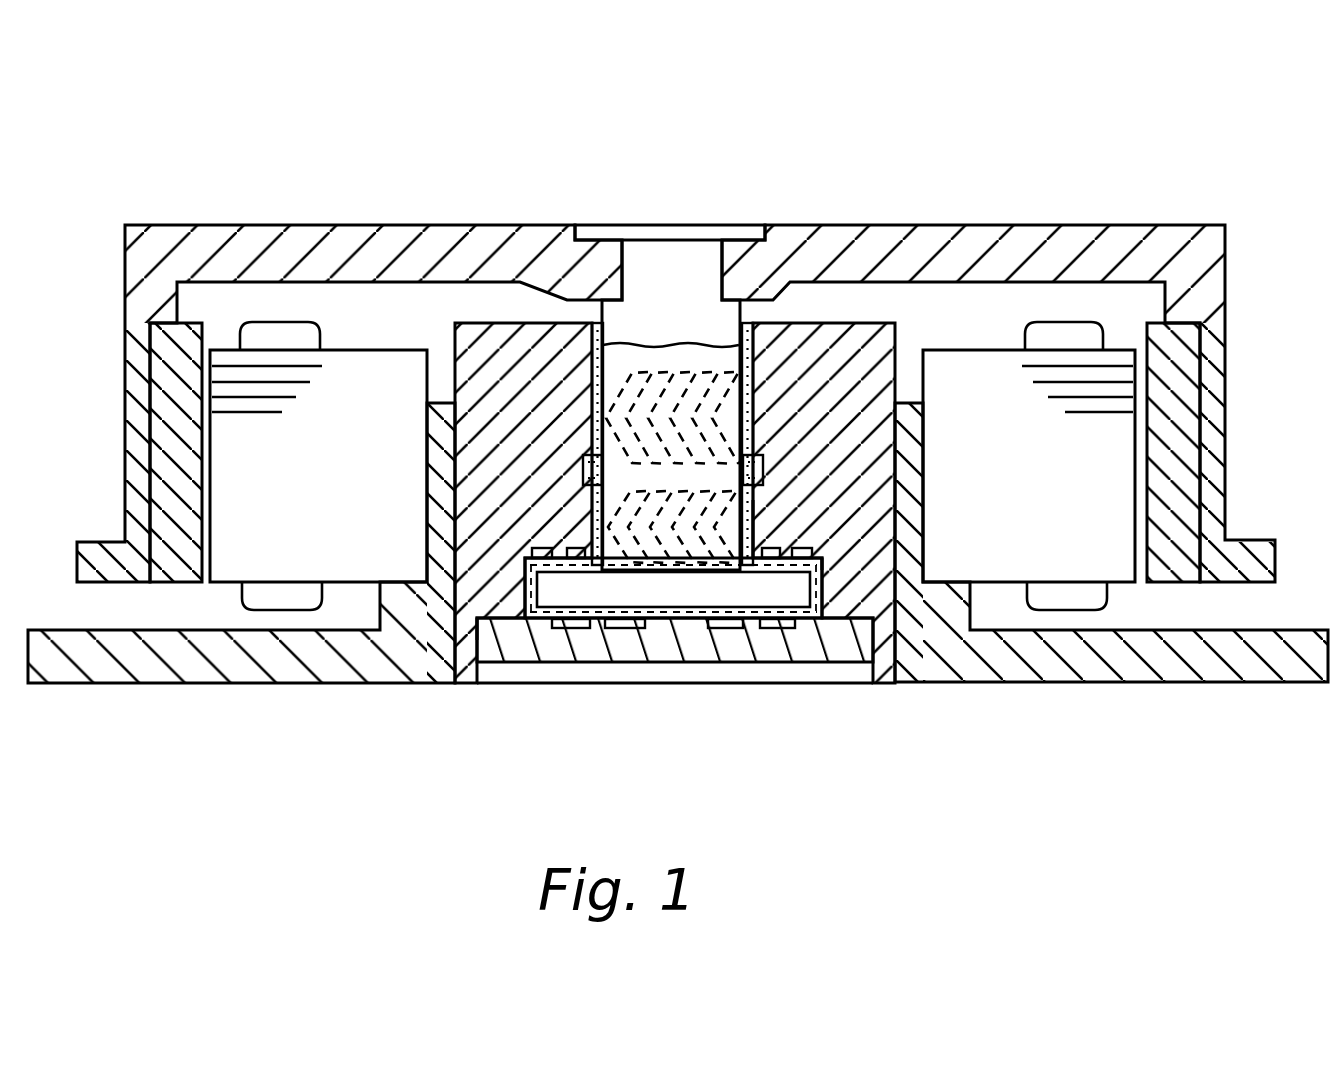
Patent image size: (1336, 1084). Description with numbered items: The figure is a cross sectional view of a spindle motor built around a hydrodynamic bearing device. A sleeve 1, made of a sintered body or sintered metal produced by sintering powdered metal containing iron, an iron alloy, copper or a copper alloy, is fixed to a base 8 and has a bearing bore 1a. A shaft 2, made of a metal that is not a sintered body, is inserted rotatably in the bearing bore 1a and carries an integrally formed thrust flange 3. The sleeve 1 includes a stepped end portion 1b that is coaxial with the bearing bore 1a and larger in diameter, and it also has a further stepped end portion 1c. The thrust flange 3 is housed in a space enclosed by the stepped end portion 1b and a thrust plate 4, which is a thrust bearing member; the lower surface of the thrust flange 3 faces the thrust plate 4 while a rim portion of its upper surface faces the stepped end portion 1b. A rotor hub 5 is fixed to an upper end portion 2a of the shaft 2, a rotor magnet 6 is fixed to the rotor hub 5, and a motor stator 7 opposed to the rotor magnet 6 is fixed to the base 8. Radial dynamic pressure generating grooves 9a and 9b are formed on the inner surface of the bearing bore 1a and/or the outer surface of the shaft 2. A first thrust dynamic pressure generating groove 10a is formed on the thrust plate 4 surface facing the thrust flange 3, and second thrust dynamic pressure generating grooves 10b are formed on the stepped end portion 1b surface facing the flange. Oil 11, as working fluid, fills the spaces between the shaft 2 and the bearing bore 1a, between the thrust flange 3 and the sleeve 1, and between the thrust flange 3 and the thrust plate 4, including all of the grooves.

The sleeve 1 is at (827, 340).
The bearing bore 1a is at (735, 530).
The stepped end portion 1b is at (797, 562).
The stepped end portion 1c is at (510, 617).
The shaft 2 is at (641, 320).
The upper end portion 2a is at (672, 262).
The thrust flange 3 is at (570, 592).
The thrust plate 4 is at (840, 650).
The rotor hub 5 is at (1020, 248).
The rotor magnet 6 is at (178, 437).
The motor stator 7 is at (260, 530).
The base 8 is at (1105, 652).
The radial dynamic pressure generating groove 9a is at (700, 372).
The radial dynamic pressure generating groove 9b is at (655, 557).
The first thrust dynamic pressure generating groove 10a is at (628, 623).
The second thrust dynamic pressure generating grooves 10b is at (768, 580).
The oil 11 is at (597, 355).